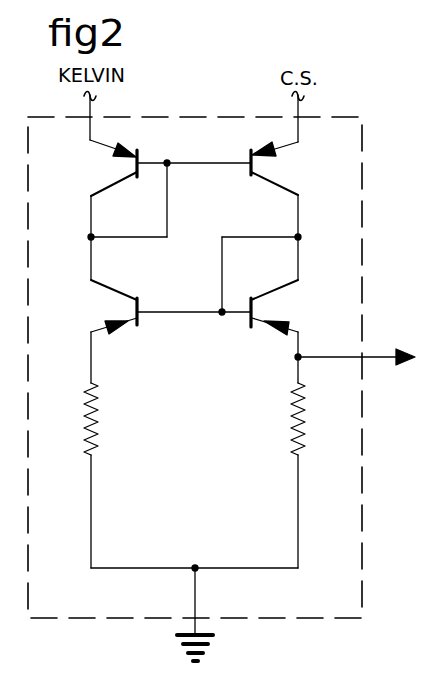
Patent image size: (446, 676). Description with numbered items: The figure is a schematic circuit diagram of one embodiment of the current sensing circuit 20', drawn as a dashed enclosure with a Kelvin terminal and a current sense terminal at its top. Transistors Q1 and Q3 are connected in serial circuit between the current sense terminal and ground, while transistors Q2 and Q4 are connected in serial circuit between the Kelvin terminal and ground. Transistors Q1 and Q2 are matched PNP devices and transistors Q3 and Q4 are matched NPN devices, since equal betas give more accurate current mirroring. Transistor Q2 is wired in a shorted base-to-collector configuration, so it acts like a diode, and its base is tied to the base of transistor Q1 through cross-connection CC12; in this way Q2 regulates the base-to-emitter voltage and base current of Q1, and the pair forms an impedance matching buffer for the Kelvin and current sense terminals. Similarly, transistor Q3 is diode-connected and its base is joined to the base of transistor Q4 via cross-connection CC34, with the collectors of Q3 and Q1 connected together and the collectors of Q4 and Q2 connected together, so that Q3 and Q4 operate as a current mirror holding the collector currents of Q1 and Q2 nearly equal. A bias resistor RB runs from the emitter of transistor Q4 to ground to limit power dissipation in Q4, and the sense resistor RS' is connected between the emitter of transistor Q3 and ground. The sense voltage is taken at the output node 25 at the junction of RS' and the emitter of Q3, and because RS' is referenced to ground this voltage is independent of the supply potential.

The current sensing circuit 20' is at (212, 343).
The output terminal 25 is at (386, 354).
The transistor Q1 is at (288, 189).
The transistor Q2 is at (103, 190).
The transistor Q3 is at (288, 331).
The transistor Q4 is at (103, 331).
The cross-connection CC12 is at (178, 163).
The cross-connection CC34 is at (145, 311).
The bias resistor RB is at (76, 475).
The sense resistor RS' is at (312, 475).